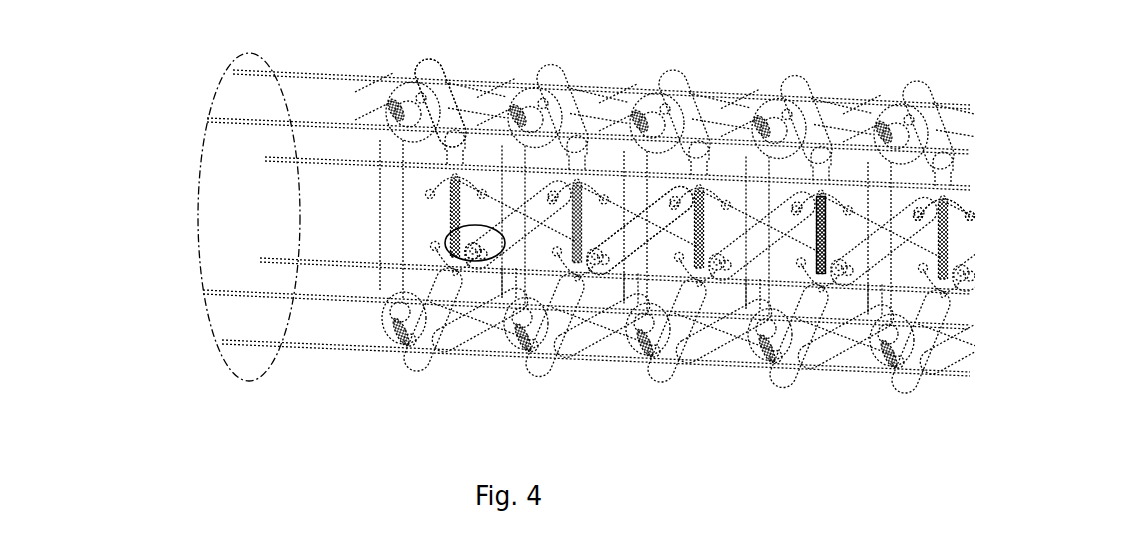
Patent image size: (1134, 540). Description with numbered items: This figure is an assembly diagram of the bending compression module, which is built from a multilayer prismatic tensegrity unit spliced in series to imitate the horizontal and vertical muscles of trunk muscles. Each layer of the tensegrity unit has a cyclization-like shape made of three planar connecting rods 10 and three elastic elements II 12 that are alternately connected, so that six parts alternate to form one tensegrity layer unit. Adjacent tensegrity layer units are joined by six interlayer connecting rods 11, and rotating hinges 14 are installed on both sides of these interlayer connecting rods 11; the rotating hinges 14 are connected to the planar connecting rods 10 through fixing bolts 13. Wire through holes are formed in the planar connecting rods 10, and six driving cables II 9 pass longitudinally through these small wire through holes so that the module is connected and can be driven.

The driving cable II 9 is at (197, 218).
The planar connecting rod 10 is at (438, 118).
The interlayer connecting rod 11 is at (648, 227).
The elastic element II 12 is at (822, 230).
The fixing bolt 13 is at (965, 207).
The rotating hinge 14 is at (474, 262).